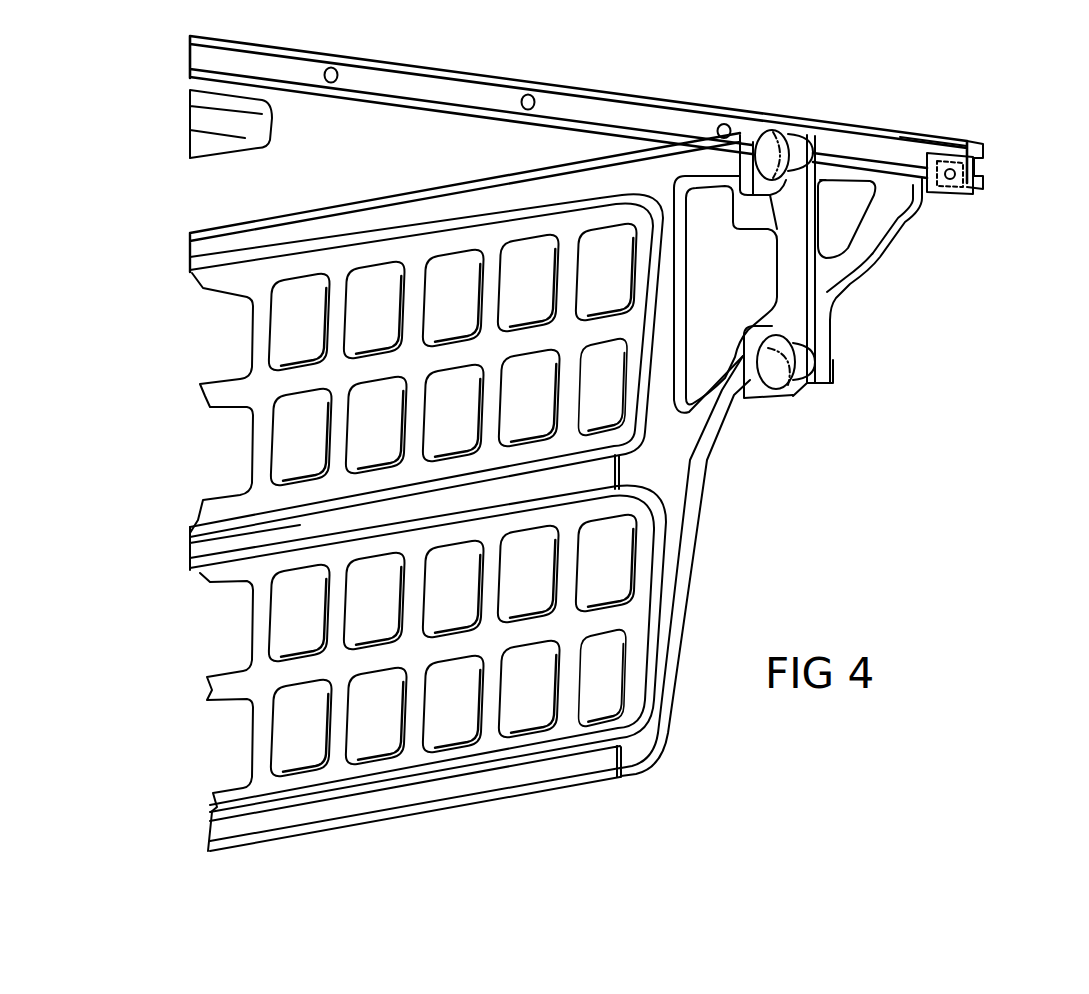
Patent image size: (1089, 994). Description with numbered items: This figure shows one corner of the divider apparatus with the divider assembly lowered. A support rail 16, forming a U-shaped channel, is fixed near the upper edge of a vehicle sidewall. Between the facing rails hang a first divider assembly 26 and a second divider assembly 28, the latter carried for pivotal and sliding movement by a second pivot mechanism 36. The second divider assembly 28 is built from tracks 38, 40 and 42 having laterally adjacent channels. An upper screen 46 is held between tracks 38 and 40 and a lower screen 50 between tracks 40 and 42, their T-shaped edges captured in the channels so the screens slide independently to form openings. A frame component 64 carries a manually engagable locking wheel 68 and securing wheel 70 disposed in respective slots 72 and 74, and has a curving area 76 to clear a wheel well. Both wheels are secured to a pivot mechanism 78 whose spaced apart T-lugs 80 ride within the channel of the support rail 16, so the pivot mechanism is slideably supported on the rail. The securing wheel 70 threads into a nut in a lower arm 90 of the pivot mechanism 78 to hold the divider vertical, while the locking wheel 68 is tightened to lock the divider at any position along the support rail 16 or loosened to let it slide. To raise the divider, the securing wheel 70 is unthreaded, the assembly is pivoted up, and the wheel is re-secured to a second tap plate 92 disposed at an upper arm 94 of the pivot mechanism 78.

The support rail 16 is at (461, 70).
The first divider assembly 26 is at (268, 102).
The second divider assembly 28 is at (356, 202).
The second pivot mechanism 36 is at (930, 252).
The track 38 is at (200, 257).
The track 40 is at (193, 549).
The track 42 is at (222, 836).
The upper screen 46 is at (487, 246).
The lower screen 50 is at (491, 743).
The frame component 64 is at (706, 547).
The locking wheel 68 is at (758, 148).
The securing wheel 70 is at (779, 372).
The slot 72 is at (768, 230).
The slot 74 is at (797, 340).
The curving area 76 is at (699, 447).
The pivot mechanism 78 is at (877, 262).
The T-lugs 80 is at (985, 155).
The lower arm 90 is at (835, 366).
The second tap plate 92 is at (922, 144).
The upper arm 94 is at (920, 188).